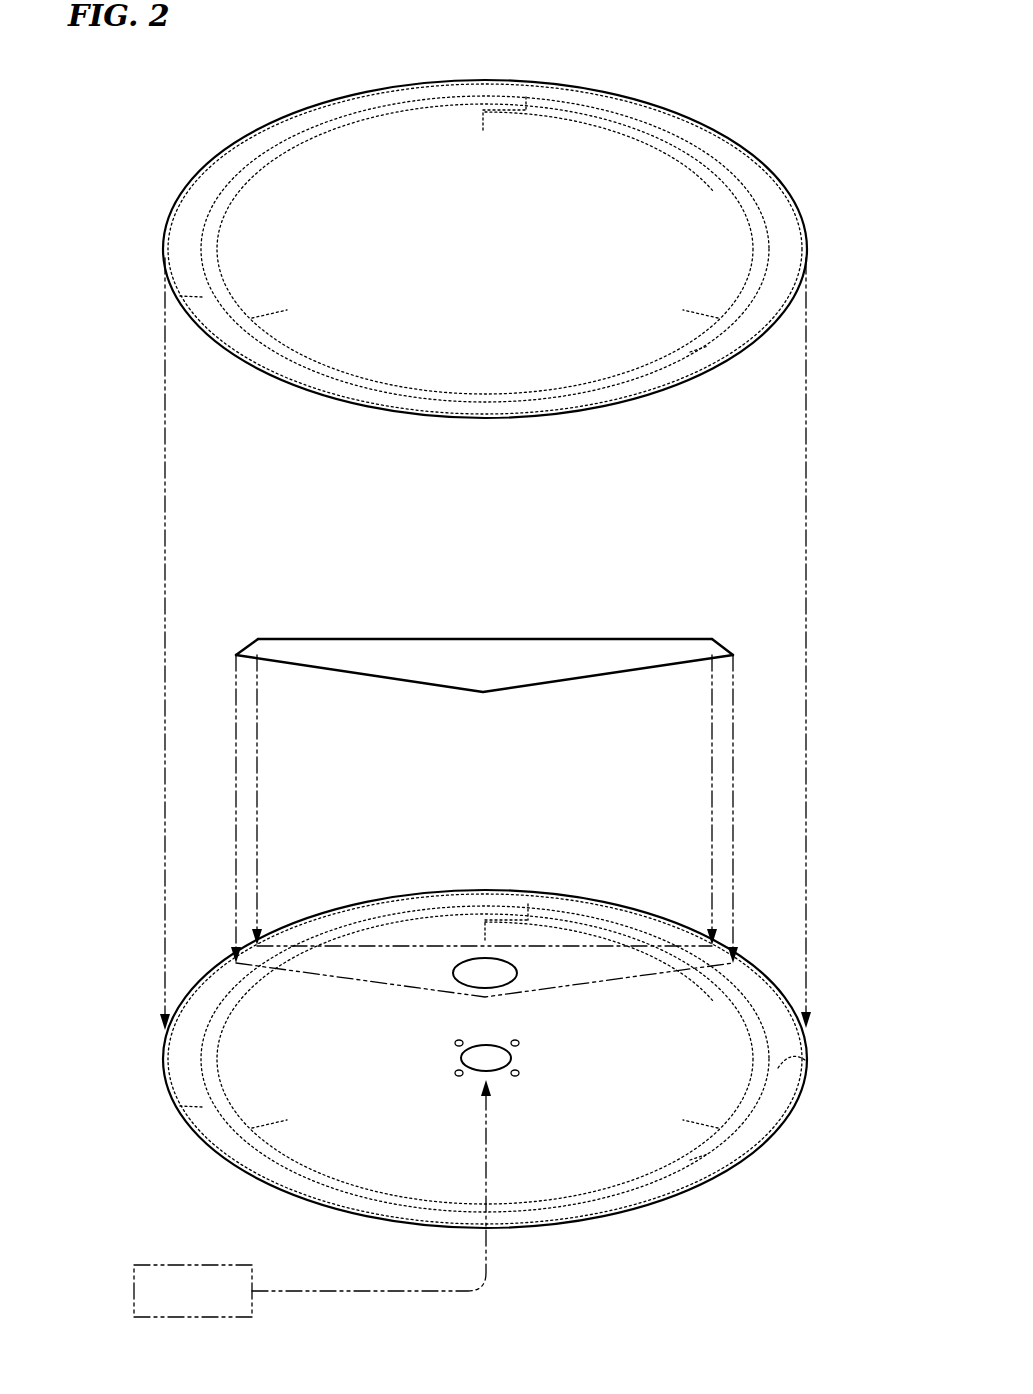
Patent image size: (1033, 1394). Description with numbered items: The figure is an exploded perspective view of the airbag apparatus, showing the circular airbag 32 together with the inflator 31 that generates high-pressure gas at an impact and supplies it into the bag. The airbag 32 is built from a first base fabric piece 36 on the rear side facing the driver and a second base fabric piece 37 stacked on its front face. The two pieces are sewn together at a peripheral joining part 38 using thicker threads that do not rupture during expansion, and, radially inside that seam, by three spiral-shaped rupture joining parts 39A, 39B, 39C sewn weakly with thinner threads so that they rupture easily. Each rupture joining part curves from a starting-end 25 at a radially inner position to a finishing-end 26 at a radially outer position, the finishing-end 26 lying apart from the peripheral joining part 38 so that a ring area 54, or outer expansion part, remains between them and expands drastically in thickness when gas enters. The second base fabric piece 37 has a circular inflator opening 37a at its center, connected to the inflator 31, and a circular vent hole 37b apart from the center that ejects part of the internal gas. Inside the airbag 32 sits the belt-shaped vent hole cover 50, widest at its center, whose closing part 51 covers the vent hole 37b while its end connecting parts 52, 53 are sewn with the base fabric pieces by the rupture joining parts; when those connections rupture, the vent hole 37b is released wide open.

The starting-end 25 is at (483, 124).
The finishing-end 26 is at (525, 108).
The inflator 31 is at (134, 1282).
The airbag 32 is at (150, 1105).
The first base fabric piece 36 is at (242, 124).
The second base fabric piece 37 is at (330, 896).
The inflator opening 37a is at (510, 1053).
The vent hole 37b is at (484, 962).
The peripheral joining part 38 is at (793, 208).
The rupture joining part 39A is at (462, 92).
The rupture joining part 39B is at (493, 100).
The rupture joining part 39C is at (543, 108).
The vent hole cover 50 is at (648, 638).
The closing part 51 is at (483, 652).
The connecting part 52 is at (246, 648).
The connecting part 53 is at (722, 650).
The ring area 54 is at (805, 1060).